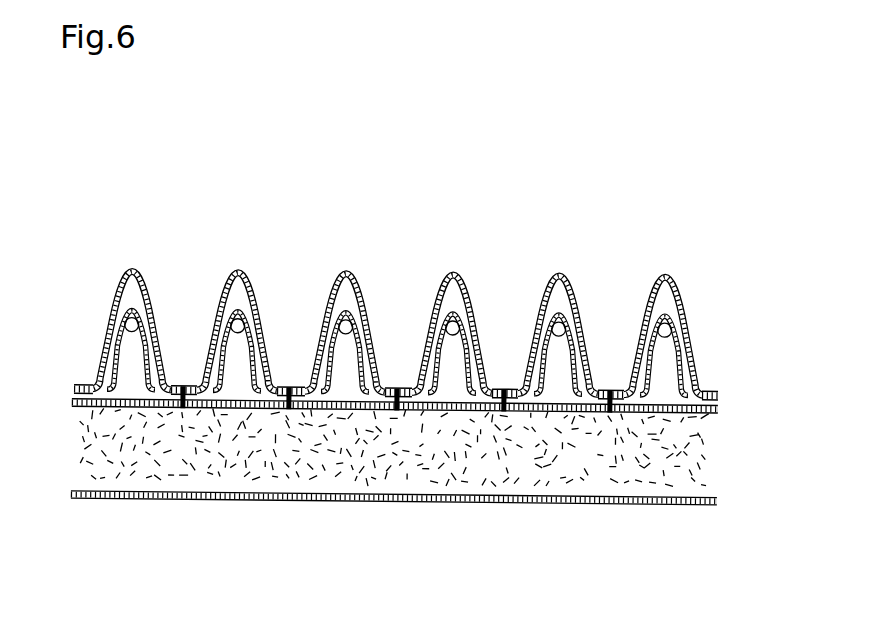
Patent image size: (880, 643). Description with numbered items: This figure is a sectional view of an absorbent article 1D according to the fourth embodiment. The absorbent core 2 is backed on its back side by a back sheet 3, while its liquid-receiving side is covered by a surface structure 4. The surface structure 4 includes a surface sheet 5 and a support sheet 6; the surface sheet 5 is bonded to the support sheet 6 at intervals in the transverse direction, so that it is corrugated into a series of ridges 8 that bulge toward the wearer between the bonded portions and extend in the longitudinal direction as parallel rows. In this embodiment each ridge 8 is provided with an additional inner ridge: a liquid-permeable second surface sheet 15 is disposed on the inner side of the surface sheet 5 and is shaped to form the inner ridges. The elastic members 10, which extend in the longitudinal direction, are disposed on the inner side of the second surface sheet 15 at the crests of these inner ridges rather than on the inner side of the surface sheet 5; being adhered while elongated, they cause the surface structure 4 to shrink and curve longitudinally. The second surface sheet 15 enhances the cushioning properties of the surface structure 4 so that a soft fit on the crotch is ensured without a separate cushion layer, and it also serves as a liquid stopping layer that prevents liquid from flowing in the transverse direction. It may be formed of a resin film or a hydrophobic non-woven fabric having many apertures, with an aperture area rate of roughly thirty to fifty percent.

The absorbent article 1D is at (248, 231).
The absorbent core 2 is at (714, 463).
The back sheet 3 is at (708, 500).
The surface structure 4 is at (38, 263).
The surface sheet 5 is at (687, 332).
The support sheet 6 is at (712, 409).
The ridges 8 is at (461, 256).
The elastic members 10 is at (578, 328).
The second surface sheet 15 is at (541, 378).